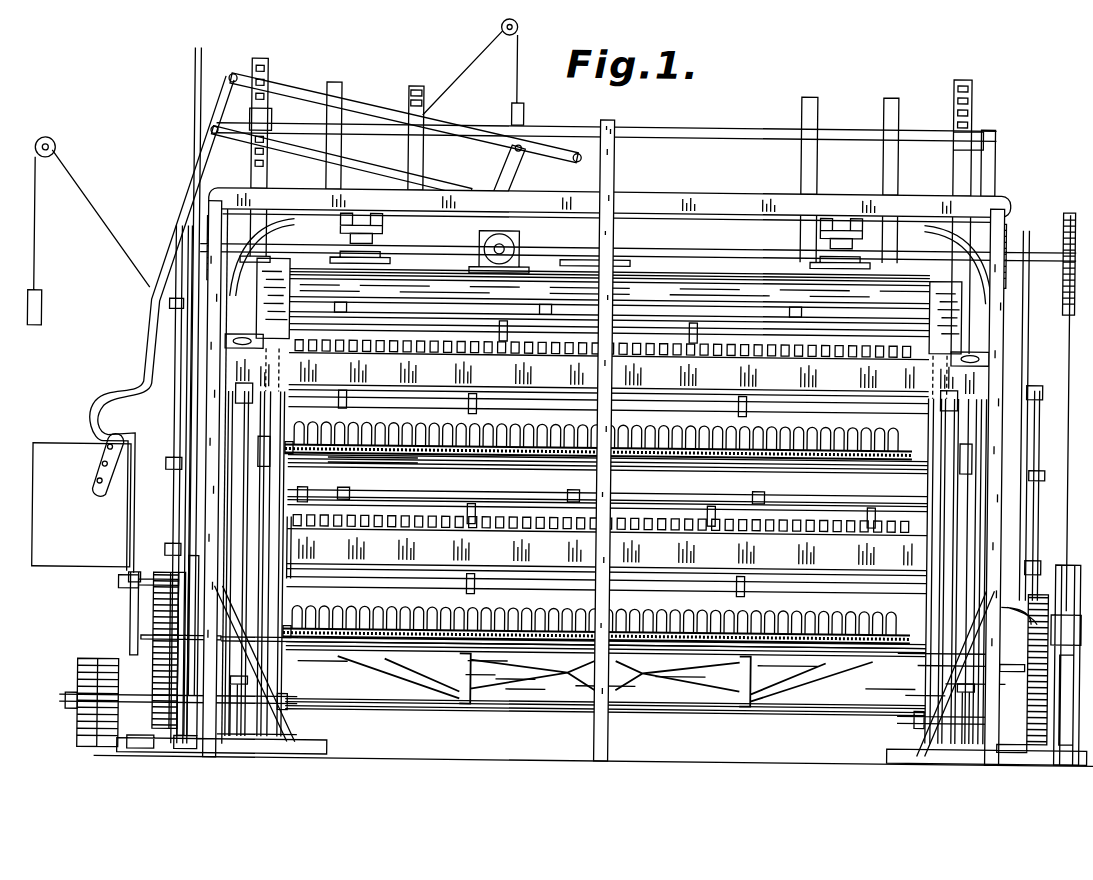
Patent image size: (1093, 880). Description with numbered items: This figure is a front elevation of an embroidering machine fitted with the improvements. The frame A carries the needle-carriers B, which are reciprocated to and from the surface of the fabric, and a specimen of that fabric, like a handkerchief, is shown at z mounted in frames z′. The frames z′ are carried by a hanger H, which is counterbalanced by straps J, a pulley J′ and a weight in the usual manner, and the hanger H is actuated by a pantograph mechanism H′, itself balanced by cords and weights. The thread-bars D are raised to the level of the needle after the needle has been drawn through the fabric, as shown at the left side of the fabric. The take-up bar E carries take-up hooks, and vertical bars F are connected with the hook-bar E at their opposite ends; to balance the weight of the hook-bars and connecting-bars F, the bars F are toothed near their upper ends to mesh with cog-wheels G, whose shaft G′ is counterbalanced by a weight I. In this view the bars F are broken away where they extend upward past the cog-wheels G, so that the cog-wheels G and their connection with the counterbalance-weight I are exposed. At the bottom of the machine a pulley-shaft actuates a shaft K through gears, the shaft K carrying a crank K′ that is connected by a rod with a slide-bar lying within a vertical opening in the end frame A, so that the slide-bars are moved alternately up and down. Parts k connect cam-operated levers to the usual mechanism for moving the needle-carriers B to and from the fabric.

The frame A is at (706, 189).
The needle-carriers B is at (378, 358).
The thread-bars D is at (806, 410).
The take-up bar E is at (811, 463).
The vertical bars F is at (188, 526).
The cog-wheels G is at (217, 238).
The shaft G′ is at (1059, 276).
The hanger H is at (608, 289).
The pantograph mechanism H′ is at (369, 113).
The weight I is at (1073, 606).
The straps J is at (814, 182).
The pulley J′ is at (264, 170).
The shaft K is at (130, 654).
The crank K′ is at (120, 602).
The parts k is at (178, 381).
The fabric z is at (400, 416).
The frames z′ is at (428, 500).